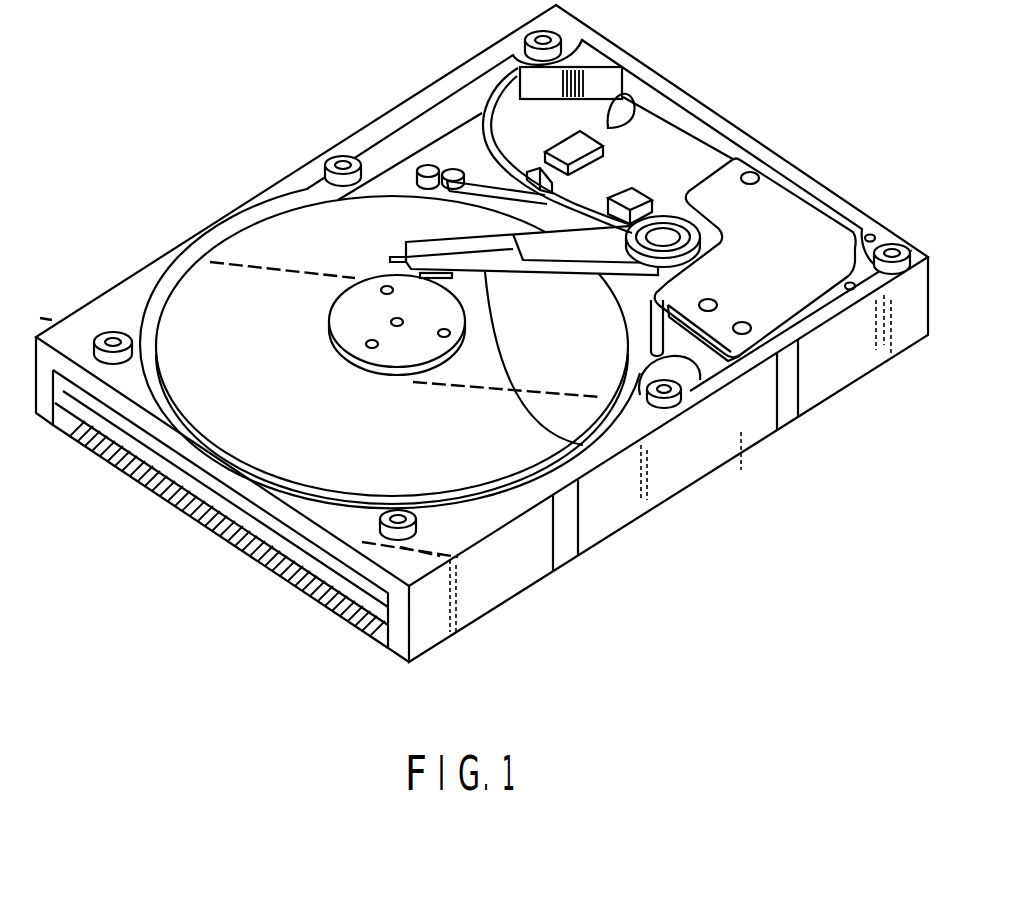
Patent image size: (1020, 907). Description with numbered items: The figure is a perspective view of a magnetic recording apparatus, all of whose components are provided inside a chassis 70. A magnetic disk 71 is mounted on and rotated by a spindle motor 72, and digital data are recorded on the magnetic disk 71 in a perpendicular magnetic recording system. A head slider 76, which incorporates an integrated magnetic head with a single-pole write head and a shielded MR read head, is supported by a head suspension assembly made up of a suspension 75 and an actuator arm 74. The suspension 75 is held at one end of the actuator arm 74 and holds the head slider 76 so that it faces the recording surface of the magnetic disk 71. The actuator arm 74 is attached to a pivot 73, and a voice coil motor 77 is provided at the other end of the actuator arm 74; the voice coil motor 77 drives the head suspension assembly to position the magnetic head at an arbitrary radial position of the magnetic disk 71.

The chassis 70 is at (72, 332).
The magnetic disk 71 is at (250, 250).
The spindle motor 72 is at (343, 333).
The pivot 73 is at (663, 236).
The actuator arm 74 is at (630, 392).
The suspension 75 is at (547, 250).
The head slider 76 is at (433, 278).
The voice coil motor 77 is at (817, 241).